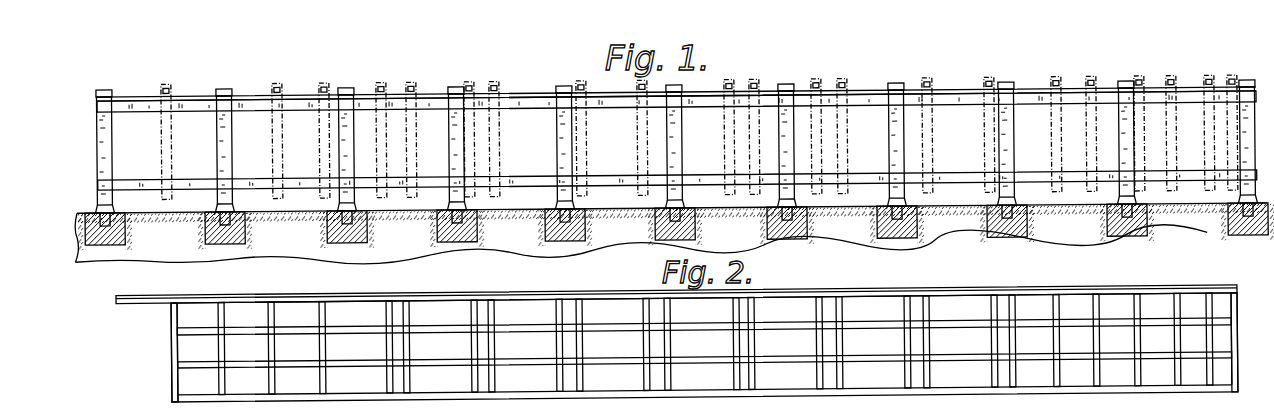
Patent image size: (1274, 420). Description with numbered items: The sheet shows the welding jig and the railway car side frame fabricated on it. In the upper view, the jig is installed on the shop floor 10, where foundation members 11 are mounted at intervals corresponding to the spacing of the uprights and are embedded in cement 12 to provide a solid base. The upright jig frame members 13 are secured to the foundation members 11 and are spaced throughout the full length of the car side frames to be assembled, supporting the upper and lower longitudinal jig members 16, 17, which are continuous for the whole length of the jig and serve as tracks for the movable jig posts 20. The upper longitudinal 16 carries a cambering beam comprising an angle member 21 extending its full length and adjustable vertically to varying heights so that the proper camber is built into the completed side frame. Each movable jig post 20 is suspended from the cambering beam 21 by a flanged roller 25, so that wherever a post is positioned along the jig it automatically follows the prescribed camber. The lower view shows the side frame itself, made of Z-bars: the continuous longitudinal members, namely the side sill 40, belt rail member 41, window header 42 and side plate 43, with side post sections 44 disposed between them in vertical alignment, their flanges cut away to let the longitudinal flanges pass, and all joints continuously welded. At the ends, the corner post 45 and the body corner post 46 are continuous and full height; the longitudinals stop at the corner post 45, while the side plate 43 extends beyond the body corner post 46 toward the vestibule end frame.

In FIG. 1, the floor 10 is at (135, 212).
In FIG. 1, the foundation members 11 is at (225, 245).
In FIG. 1, the cement 12 is at (100, 246).
In FIG. 1, the upright jig frame members 13 is at (108, 90).
In FIG. 1, the upper longitudinal jig member 16 is at (710, 113).
In FIG. 1, the lower longitudinal jig member 17 is at (606, 178).
In FIG. 1, the movable jig posts 20 is at (172, 158).
In FIG. 1, the cambering beam angle member 21 is at (521, 93).
In FIG. 1, the rollers 25 is at (225, 88).
In FIG. 2, the side sill 40 is at (680, 397).
In FIG. 2, the belt rail member 41 is at (720, 360).
In FIG. 2, the window header 42 is at (620, 324).
In FIG. 2, the side plate 43 is at (601, 294).
In FIG. 2, the side post sections 44 is at (483, 312).
In FIG. 2, the corner post 45 is at (1233, 362).
In FIG. 2, the body corner post 46 is at (172, 348).